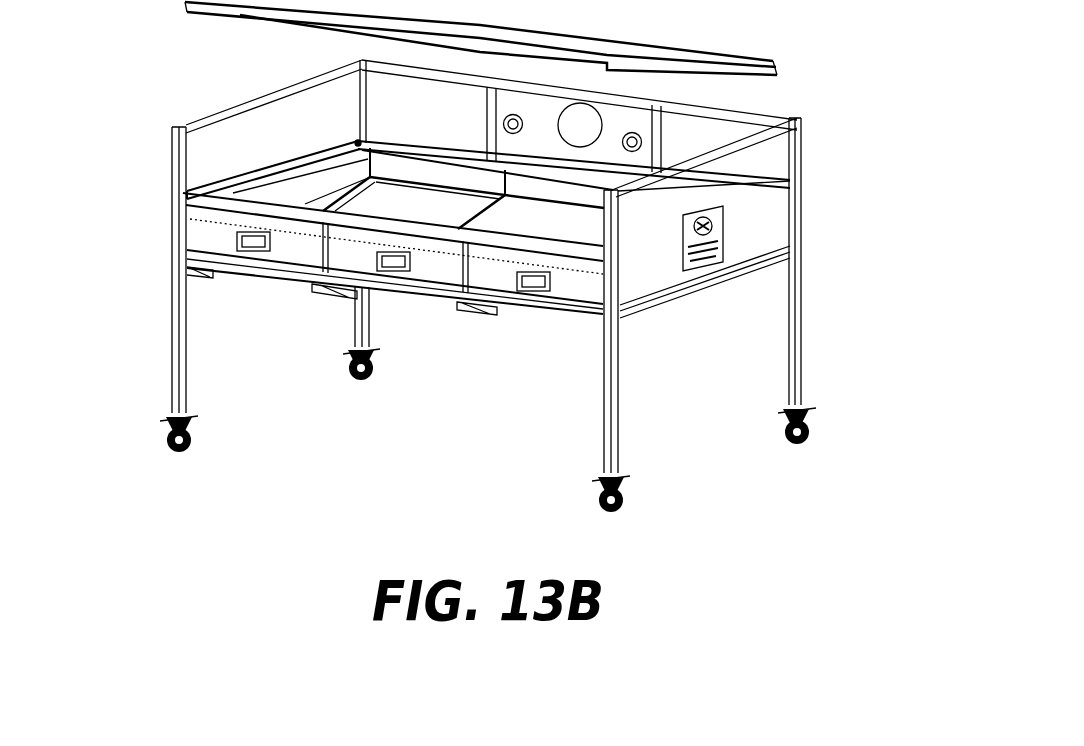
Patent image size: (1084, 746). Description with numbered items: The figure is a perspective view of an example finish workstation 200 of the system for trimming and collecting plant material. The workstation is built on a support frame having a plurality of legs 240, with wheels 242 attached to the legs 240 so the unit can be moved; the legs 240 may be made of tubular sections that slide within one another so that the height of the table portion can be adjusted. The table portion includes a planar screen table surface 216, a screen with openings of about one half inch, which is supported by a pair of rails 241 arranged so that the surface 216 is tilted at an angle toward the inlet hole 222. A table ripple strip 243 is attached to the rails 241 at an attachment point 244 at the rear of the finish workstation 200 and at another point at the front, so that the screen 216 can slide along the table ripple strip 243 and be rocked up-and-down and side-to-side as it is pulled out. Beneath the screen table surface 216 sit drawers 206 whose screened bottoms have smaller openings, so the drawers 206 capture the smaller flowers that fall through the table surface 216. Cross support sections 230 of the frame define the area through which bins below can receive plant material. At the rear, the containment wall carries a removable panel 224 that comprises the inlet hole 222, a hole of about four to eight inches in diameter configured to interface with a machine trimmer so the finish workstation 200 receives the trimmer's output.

The finish workstation 200 is at (126, 56).
The planar screen table surface 216 is at (779, 65).
The inlet hole 222 is at (594, 123).
The removable panel 224 is at (608, 151).
The attachment point 244 is at (356, 141).
The table ripple strip 243 is at (262, 163).
The rails 241 is at (262, 170).
The drawer 206 is at (435, 268).
The cross support section 230 is at (318, 292).
The legs 240 is at (800, 325).
The wheels 242 is at (823, 422).